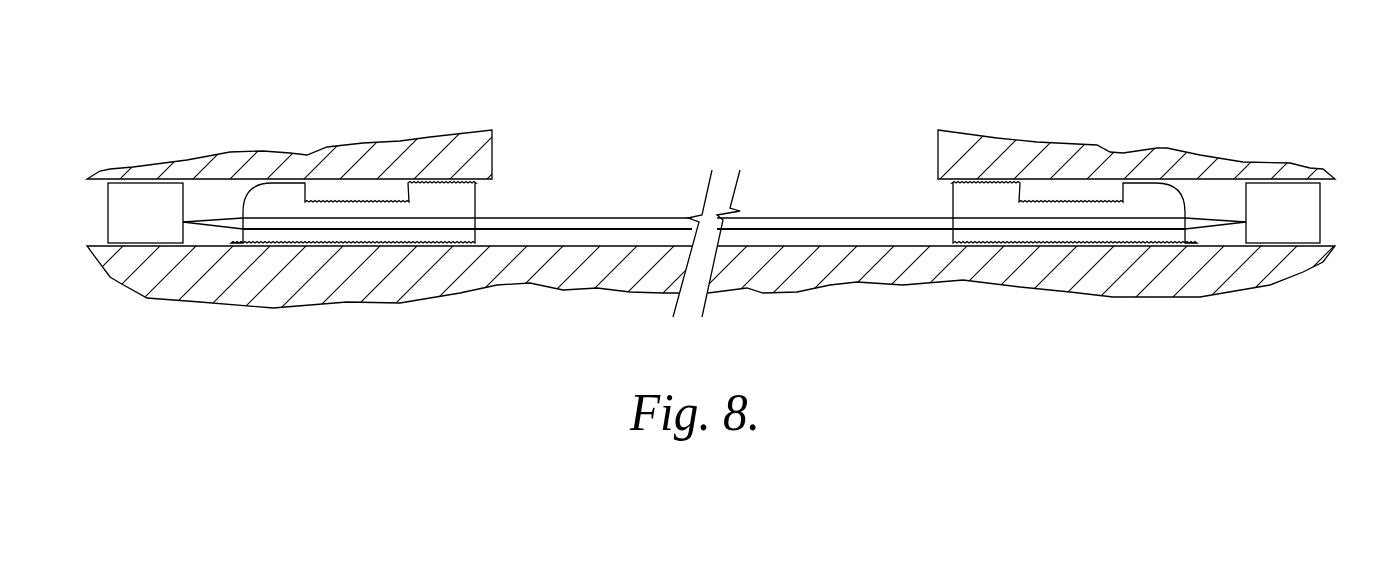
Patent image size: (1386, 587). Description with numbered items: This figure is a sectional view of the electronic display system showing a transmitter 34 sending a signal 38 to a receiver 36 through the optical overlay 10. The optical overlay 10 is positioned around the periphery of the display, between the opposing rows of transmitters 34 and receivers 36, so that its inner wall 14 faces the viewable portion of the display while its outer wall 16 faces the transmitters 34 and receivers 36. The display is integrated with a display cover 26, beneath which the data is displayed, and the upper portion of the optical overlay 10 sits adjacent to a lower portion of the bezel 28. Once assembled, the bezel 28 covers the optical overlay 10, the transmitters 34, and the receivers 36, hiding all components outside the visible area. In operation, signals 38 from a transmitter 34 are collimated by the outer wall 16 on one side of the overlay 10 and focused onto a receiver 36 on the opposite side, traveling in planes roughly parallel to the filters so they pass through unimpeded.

The optical overlay 10 is at (351, 186).
The inner wall 14 is at (477, 195).
The outer wall 16 is at (248, 198).
The display cover 26 is at (520, 275).
The bezel 28 is at (282, 150).
The transmitter 34 is at (711, 181).
The receiver 36 is at (115, 198).
The signal 38 is at (573, 218).